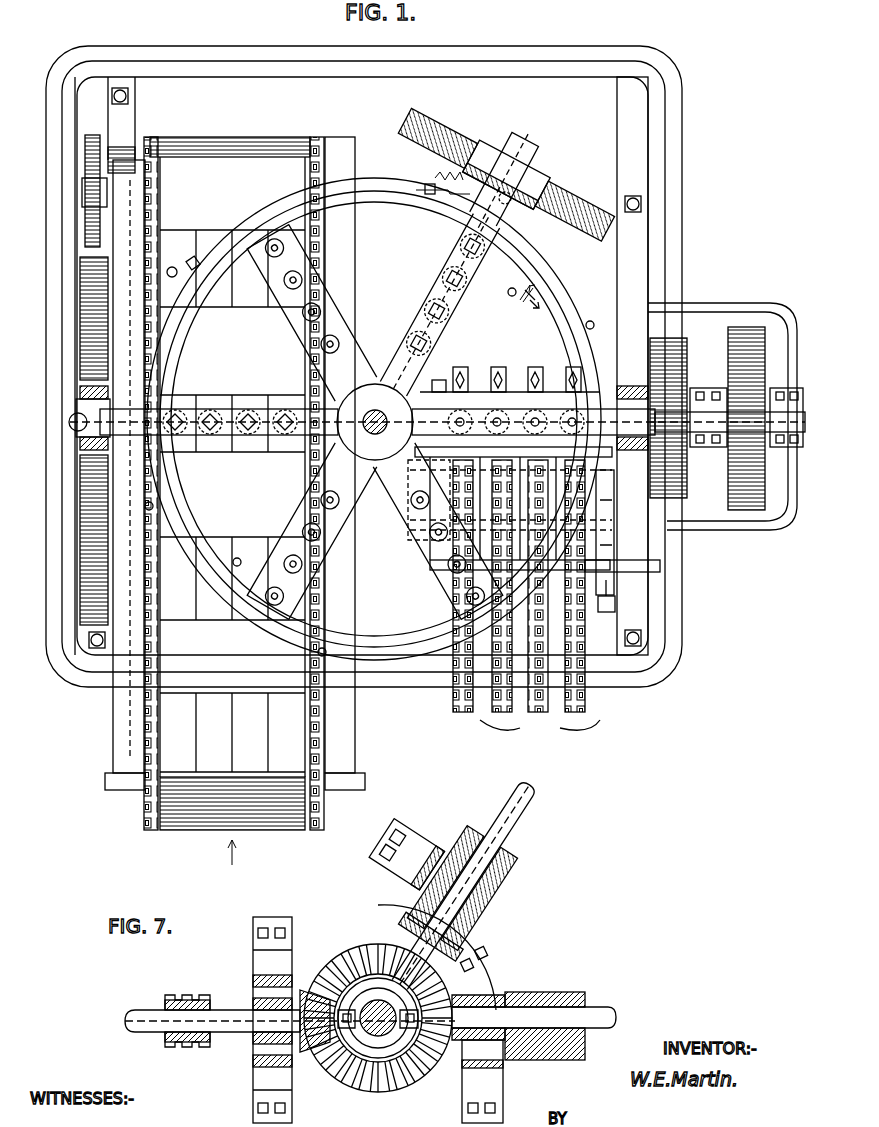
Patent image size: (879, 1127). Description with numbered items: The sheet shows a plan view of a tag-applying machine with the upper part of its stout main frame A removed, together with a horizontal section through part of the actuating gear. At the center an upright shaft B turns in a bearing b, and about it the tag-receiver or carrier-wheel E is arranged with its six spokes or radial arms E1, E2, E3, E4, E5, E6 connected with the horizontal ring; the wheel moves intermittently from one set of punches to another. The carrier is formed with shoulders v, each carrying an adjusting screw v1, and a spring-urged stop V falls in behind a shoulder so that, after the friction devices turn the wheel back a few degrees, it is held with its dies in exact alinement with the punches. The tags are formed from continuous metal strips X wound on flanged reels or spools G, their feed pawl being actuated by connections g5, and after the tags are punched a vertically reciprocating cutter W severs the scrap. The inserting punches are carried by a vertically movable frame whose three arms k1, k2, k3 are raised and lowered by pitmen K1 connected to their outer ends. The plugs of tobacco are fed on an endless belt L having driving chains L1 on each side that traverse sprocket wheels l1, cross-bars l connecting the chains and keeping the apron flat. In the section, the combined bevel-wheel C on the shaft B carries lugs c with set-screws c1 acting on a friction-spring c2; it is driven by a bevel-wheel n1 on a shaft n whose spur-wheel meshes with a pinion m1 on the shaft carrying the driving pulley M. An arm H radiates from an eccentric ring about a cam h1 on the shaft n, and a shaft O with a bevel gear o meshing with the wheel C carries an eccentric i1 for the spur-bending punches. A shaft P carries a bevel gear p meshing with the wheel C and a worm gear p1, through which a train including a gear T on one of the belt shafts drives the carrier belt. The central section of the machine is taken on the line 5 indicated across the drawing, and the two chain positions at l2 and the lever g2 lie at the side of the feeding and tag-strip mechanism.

In FIG. 1, the main frame A is at (90, 330).
In FIG. 1, the gear T is at (91, 366).
In FIG. 1, the endless belt L is at (230, 483).
In FIG. 1, the driving chain L1 is at (145, 705).
In FIG. 1, the cross-bar l is at (270, 308).
In FIG. 1, the sprocket wheel l1 is at (151, 140).
In FIG. 1, the carrier chain l2 is at (320, 145).
In FIG. 1, the tag-receiver or carrier-wheel E is at (532, 262).
In FIG. 1, the upright shaft B is at (375, 422).
In FIG. 1, the spoke or radial arm E1 is at (516, 395).
In FIG. 1, the spoke or radial arm E2 is at (440, 262).
In FIG. 1, the spoke or radial arm E3 is at (312, 313).
In FIG. 1, the spoke or radial arm E4 is at (254, 408).
In FIG. 1, the spoke or radial arm E5 is at (302, 508).
In FIG. 1, the spoke or radial arm E6 is at (410, 512).
In FIG. 1, the bearing b is at (520, 150).
In FIG. 1, the pitman K1 is at (520, 160).
In FIG. 1, the arm of frame K k1 is at (478, 408).
In FIG. 1, the arm of frame K k2 is at (206, 410).
In FIG. 1, the arm of frame K k3 is at (510, 206).
In FIG. 1, the stop V is at (444, 180).
In FIG. 1, the shoulder or off-set v is at (130, 508).
In FIG. 1, the adjusting screw v1 is at (318, 213).
In FIG. 1, the cutter W is at (548, 392).
In FIG. 1, the metal strip X is at (540, 514).
In FIG. 1, the section line 5 is at (70, 420).
In FIG. 1, the reel or spool G is at (458, 712).
In FIG. 1, the lever g2 is at (620, 571).
In FIG. 1, the connections g5 is at (606, 612).
In FIG. 1, the pinion m1 is at (688, 392).
In FIG. 1, the driving pulley M is at (725, 416).
In FIG. 7, the shaft P is at (140, 1010).
In FIG. 7, the worm gear p1 is at (187, 1033).
In FIG. 7, the bevel gear p is at (312, 998).
In FIG. 7, the bevel-wheel C is at (388, 1092).
In FIG. 7, the lug c is at (338, 1060).
In FIG. 7, the set-screw c1 is at (352, 1058).
In FIG. 7, the friction-spring c2 is at (373, 1050).
In FIG. 7, the bevel gear o is at (372, 950).
In FIG. 7, the shaft n is at (600, 1030).
In FIG. 7, the bevel-wheel n1 is at (441, 993).
In FIG. 7, the arm H is at (556, 992).
In FIG. 7, the cam h1 is at (540, 1050).
In FIG. 7, the shaft O is at (492, 803).
In FIG. 7, the eccentric or cam i1 is at (496, 858).